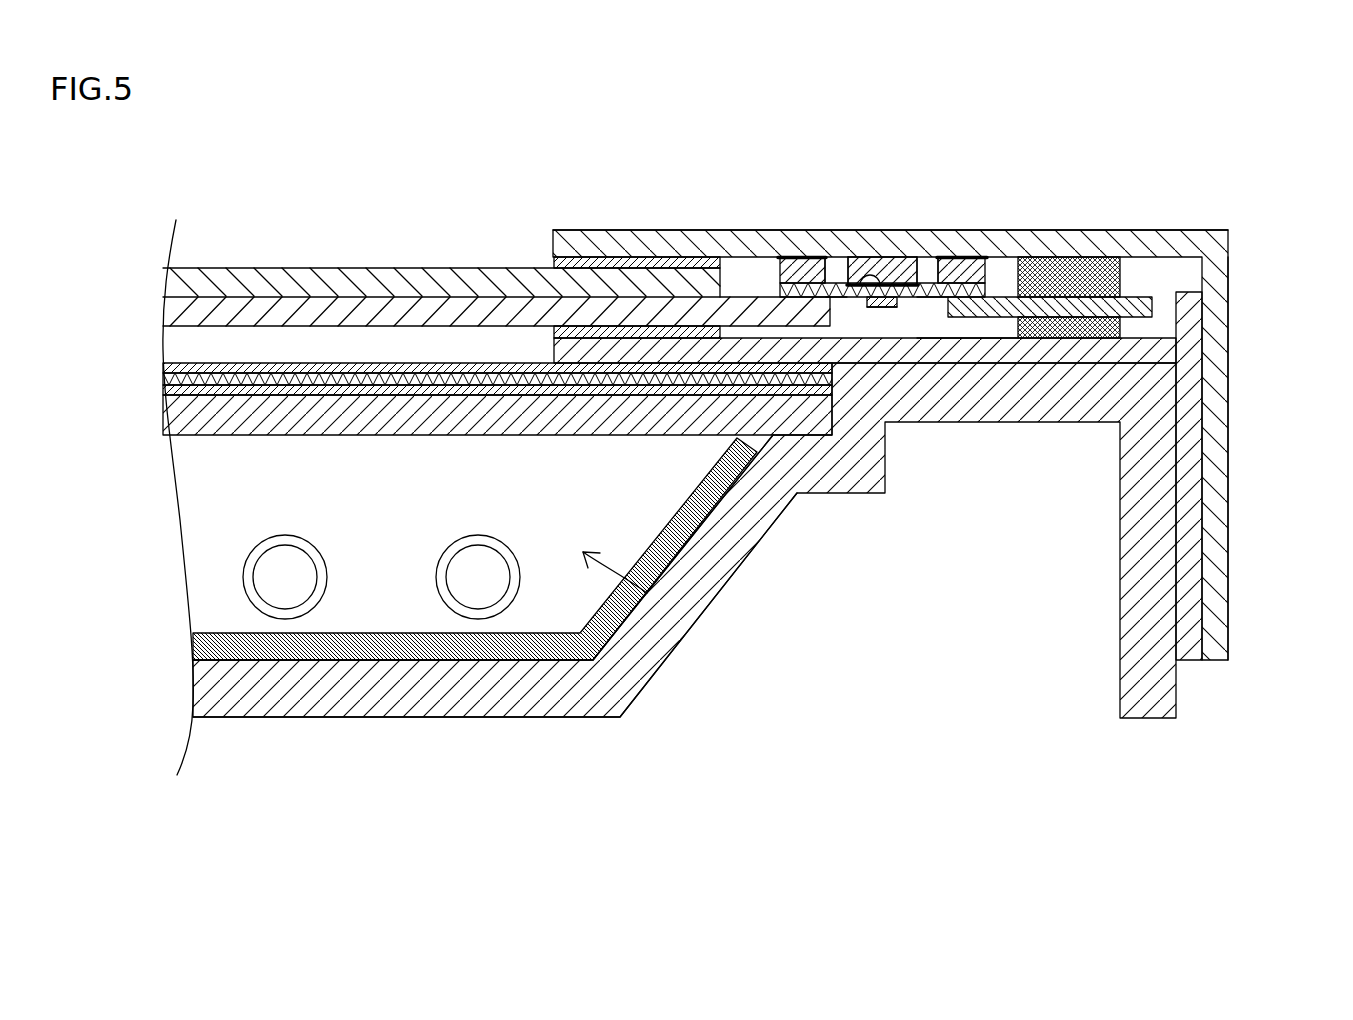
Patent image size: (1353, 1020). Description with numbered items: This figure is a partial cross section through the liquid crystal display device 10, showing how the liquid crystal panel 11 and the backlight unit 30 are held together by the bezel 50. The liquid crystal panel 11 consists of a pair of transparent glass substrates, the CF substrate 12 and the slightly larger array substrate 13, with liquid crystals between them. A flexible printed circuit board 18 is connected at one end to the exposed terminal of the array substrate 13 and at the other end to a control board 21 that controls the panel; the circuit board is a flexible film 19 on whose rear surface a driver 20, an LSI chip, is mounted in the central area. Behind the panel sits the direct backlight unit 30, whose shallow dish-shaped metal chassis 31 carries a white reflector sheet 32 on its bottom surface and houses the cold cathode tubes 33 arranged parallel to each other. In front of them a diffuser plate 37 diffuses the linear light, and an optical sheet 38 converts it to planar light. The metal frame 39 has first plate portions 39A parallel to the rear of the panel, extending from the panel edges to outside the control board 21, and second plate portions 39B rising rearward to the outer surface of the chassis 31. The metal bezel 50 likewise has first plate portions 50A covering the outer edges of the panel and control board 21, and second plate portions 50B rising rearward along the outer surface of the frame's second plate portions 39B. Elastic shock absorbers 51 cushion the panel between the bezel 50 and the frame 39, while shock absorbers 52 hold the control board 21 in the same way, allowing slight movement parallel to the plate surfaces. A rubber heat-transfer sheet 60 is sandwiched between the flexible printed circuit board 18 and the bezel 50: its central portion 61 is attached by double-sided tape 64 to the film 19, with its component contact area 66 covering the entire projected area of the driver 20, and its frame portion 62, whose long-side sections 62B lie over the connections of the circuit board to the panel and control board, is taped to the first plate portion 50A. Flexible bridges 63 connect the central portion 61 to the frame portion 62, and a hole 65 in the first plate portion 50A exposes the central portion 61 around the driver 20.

The liquid crystal display device 10 is at (438, 173).
The liquid crystal panel 11 is at (257, 278).
The CF substrate 12 is at (323, 280).
The array substrate 13 is at (383, 310).
The flexible printed circuit board 18 is at (929, 300).
The film 19 is at (836, 292).
The driver 20 is at (886, 308).
The control board 21 is at (1058, 318).
The backlight unit 30 is at (495, 621).
The chassis 31 is at (538, 714).
The reflector sheet 32 is at (422, 643).
The cold cathode tube 33 is at (283, 583).
The diffuser plate 37 is at (685, 437).
The optical sheet 38 is at (176, 375).
The frame 39 is at (740, 350).
The first plate portion 39A is at (942, 338).
The second plate portion 39B is at (1188, 468).
The bezel 50 is at (942, 379).
The first plate portion 50A is at (1147, 245).
The second plate portion 50B is at (1215, 385).
The shock absorber 51 is at (633, 330).
The shock absorber 52 is at (1033, 327).
The heat-transfer sheet 60 is at (864, 359).
The central portion 61 is at (894, 235).
The frame portion 62 is at (790, 262).
The long-side section 62B is at (960, 260).
The bridge 63 is at (833, 265).
The double-sided tape 64 is at (778, 256).
The hole 65 is at (903, 244).
The component contact area 66 is at (863, 308).